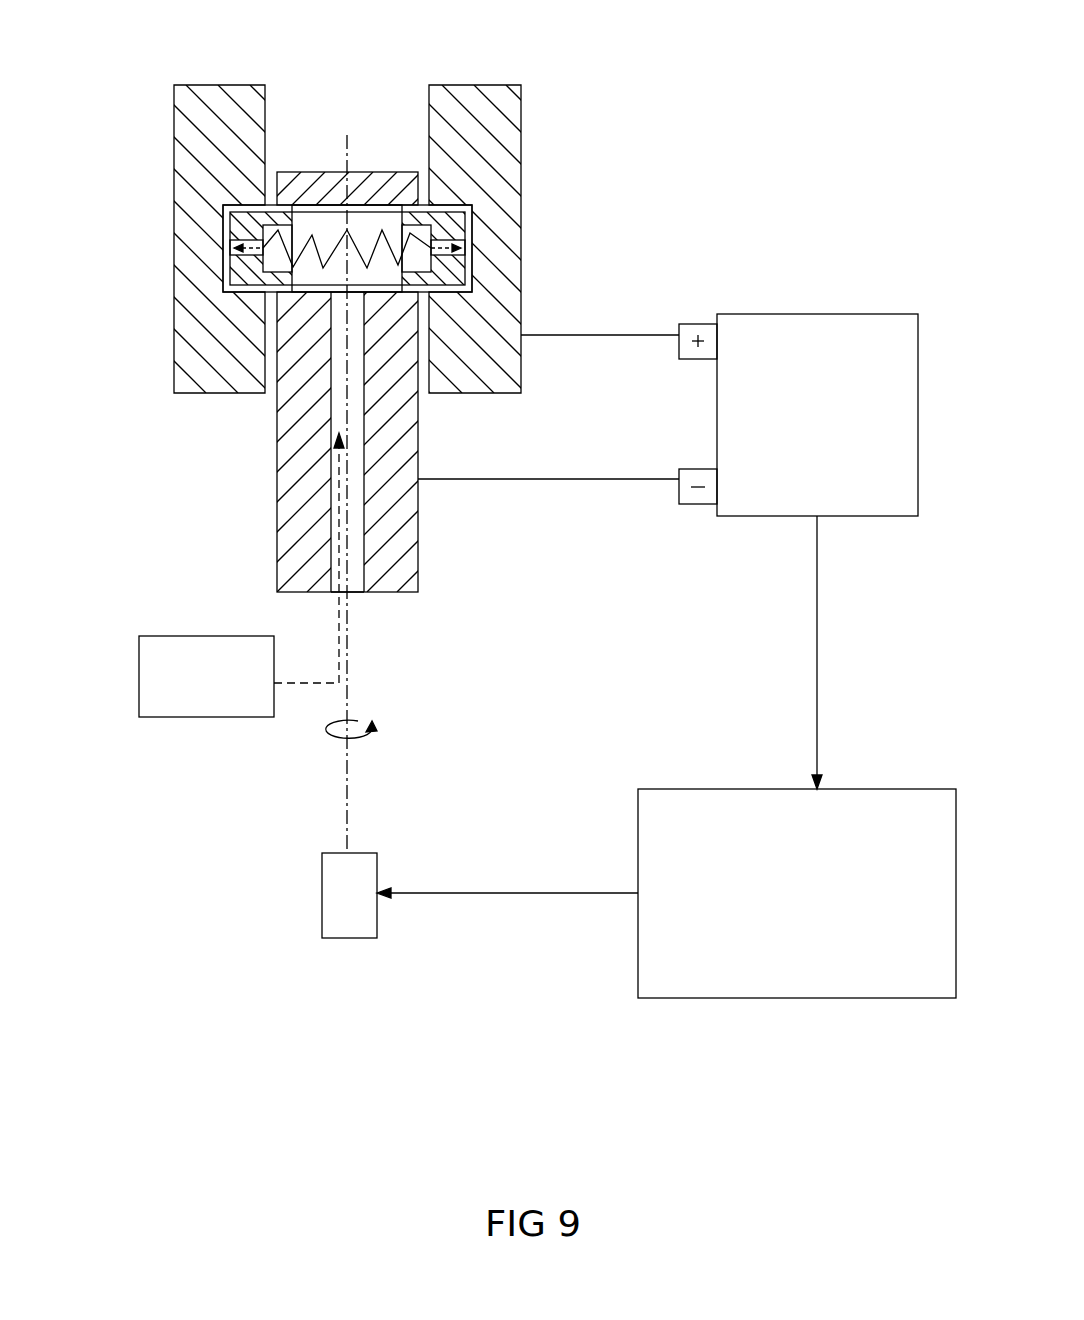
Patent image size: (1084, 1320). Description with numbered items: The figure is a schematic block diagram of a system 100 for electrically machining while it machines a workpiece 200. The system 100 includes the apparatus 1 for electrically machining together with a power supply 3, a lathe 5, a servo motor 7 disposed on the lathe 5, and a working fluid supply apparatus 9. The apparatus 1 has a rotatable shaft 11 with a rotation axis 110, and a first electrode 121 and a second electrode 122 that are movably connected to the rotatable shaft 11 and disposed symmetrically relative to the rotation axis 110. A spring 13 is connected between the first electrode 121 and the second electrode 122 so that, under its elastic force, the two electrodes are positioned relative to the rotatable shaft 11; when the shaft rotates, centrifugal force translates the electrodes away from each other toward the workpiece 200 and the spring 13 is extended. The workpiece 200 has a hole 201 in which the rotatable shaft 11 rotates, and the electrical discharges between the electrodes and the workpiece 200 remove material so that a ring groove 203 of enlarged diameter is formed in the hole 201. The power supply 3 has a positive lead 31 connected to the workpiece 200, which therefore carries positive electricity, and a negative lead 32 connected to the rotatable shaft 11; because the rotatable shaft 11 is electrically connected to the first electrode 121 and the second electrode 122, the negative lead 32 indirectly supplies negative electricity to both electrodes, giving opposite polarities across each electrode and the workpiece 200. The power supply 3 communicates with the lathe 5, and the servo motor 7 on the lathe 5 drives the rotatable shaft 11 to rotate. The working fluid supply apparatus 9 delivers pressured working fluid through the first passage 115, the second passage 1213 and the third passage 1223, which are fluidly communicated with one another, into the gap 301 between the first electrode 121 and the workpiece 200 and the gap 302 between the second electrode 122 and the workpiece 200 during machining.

The system for electrically machining 100 is at (708, 66).
The workpiece 200 is at (526, 132).
The hole 201 is at (282, 130).
The ring groove 203 is at (243, 208).
The apparatus for electrically machining 1 is at (348, 494).
The rotatable shaft 11 is at (303, 510).
The rotation axis 110 is at (349, 608).
The first passage 115 is at (333, 585).
The spring 13 is at (347, 232).
The first electrode 121 is at (250, 270).
The second electrode 122 is at (455, 268).
The second passage 1213 is at (260, 240).
The third passage 1223 is at (445, 243).
The gap 301 is at (248, 260).
The gap 302 is at (465, 275).
The power supply 3 is at (683, 520).
The positive lead 31 is at (600, 336).
The negative lead 32 is at (570, 480).
The lathe 5 is at (858, 788).
The servo motor 7 is at (322, 895).
The working fluid supply apparatus 9 is at (188, 719).